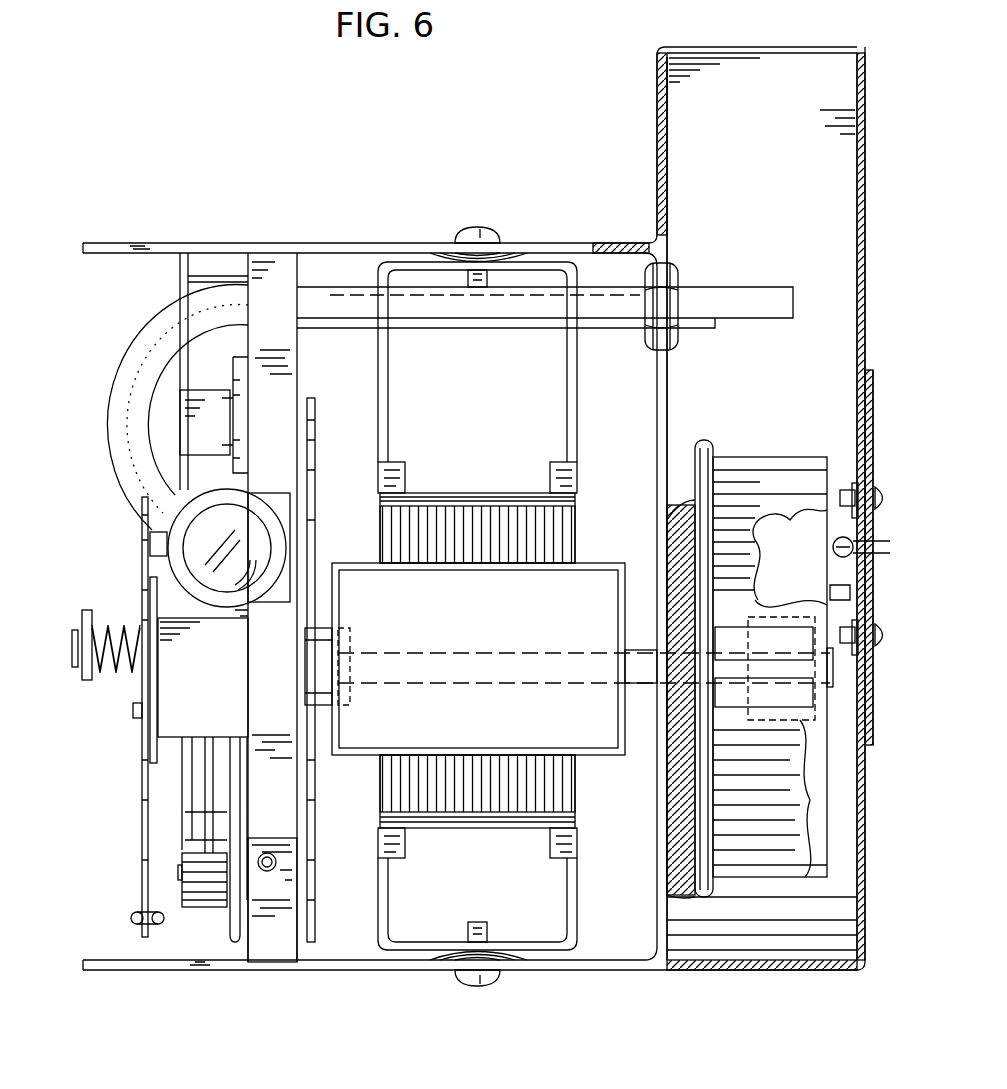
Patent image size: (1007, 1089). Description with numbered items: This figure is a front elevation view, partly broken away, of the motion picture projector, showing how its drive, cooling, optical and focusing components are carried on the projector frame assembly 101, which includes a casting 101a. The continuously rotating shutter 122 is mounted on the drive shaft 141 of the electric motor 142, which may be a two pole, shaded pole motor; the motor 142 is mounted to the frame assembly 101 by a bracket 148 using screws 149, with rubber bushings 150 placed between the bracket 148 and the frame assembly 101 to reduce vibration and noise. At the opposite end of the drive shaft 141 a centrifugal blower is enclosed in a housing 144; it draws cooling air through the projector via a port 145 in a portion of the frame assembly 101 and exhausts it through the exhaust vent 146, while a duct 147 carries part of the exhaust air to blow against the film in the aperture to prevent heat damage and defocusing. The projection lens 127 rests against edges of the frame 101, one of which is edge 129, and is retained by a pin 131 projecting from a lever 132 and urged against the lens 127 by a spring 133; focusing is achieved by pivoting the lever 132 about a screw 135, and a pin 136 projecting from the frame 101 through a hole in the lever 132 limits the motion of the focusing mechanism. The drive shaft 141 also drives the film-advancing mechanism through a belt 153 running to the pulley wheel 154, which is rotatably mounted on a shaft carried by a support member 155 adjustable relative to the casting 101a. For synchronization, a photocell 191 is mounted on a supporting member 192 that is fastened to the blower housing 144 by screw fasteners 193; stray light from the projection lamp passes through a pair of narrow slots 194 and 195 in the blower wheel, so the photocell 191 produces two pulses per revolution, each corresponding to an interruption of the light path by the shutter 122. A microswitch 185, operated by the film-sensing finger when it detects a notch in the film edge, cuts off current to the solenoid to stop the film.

The projector frame assembly 101 is at (346, 243).
The casting 101a is at (285, 354).
The continuously rotating shutter 122 is at (313, 410).
The projection lens system 127 is at (255, 545).
The edge of frame 129 is at (252, 628).
The pin 131 is at (148, 540).
The lever 132 is at (145, 783).
The spring 133 is at (112, 620).
The screw 135 is at (74, 615).
The pin 136 is at (133, 710).
The drive shaft 141 is at (636, 660).
The electric motor 142 is at (556, 535).
The blower housing 144 is at (857, 185).
The port 145 is at (672, 495).
The exhaust vent 146 is at (742, 70).
The duct 147 is at (735, 300).
The bracket 148 is at (572, 382).
The screws 149 is at (470, 227).
The rubber bushings 150 is at (530, 258).
The belt 153 is at (236, 788).
The pulley wheel 154 is at (205, 885).
The support member 155 is at (265, 940).
The microswitch 185 is at (188, 422).
The photocell 191 is at (822, 553).
The supporting member 192 is at (832, 591).
The screw fasteners 193 is at (878, 492).
The slot 194 is at (822, 531).
The slot 195 is at (825, 781).